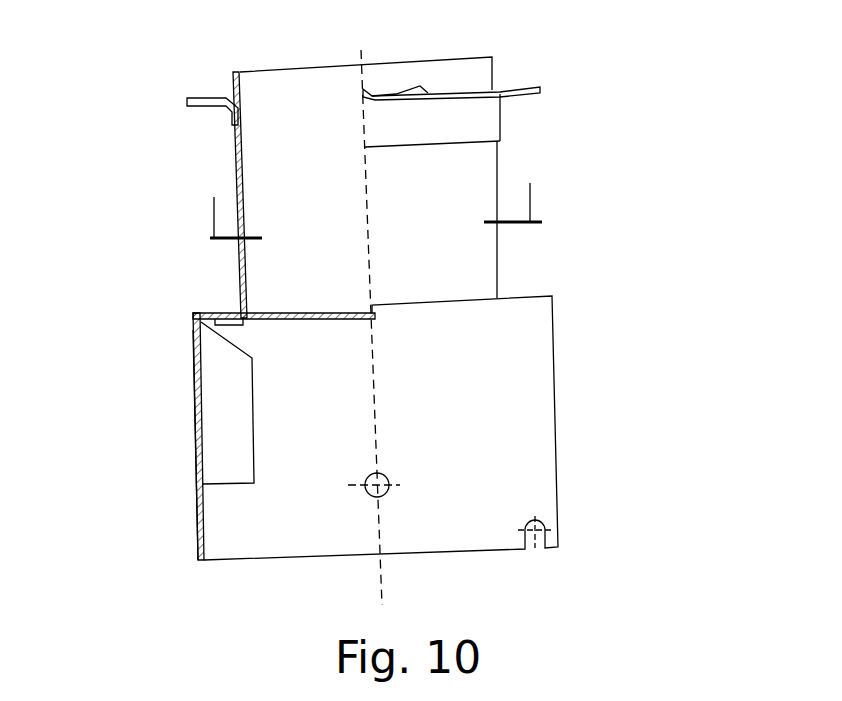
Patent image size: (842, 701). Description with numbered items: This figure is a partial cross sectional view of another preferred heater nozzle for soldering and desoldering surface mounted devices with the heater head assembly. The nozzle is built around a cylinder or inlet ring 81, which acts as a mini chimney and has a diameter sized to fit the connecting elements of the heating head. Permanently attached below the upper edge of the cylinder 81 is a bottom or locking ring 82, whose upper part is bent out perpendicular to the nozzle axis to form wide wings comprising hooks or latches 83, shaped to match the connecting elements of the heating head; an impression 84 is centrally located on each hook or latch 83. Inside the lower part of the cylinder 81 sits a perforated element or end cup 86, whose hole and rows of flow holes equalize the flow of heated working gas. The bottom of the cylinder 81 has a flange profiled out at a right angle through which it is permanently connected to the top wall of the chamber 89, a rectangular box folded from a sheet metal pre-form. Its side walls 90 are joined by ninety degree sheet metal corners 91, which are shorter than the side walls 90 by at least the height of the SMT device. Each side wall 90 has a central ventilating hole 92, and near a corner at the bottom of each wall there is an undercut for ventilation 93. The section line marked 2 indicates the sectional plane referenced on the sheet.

The cylinder or inlet ring 81 is at (450, 195).
The bottom or locking ring 82 is at (444, 99).
The hooks or latches 83 is at (140, 116).
The impressions 84 is at (522, 78).
The perforated element or end cup 86 is at (322, 307).
The chamber 89 is at (558, 340).
The side walls 90 is at (190, 381).
The sheet metal corners 91 is at (148, 403).
The ventilating hole 92 is at (392, 484).
The undercut for ventilation 93 is at (552, 529).
The section line 2- 2 is at (363, 198).